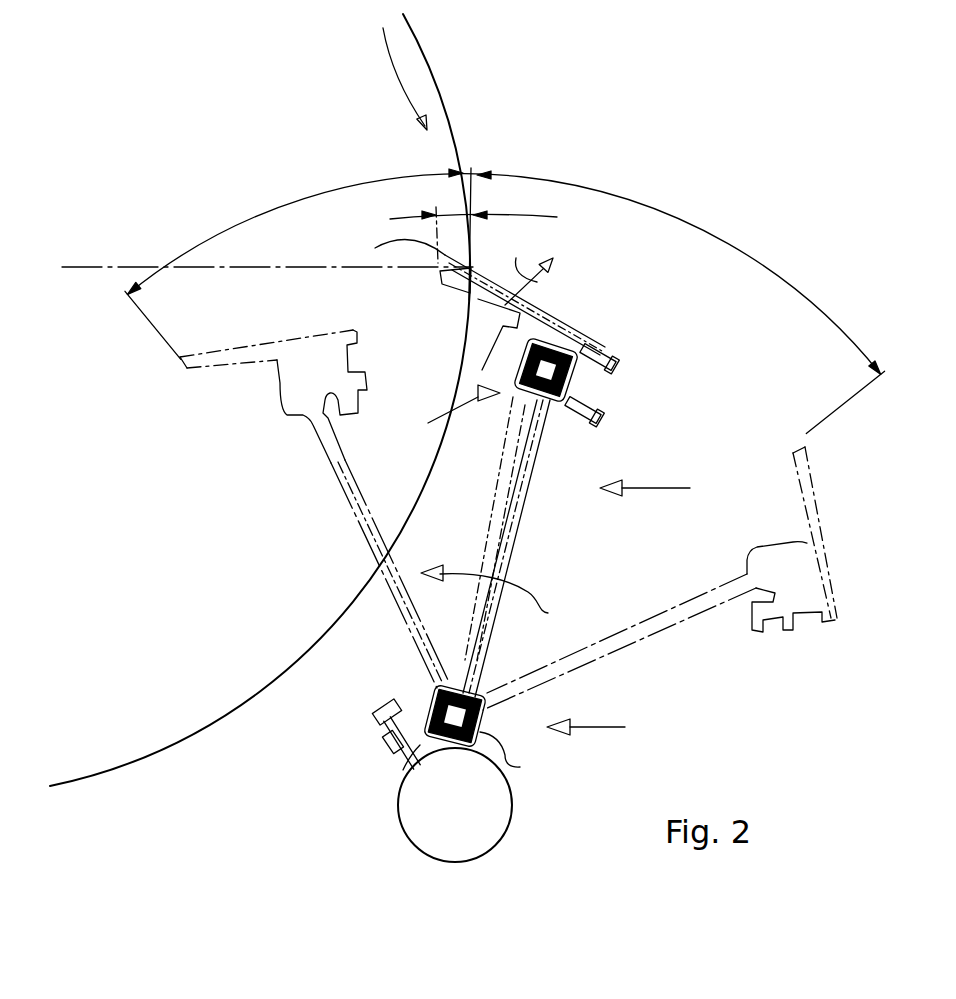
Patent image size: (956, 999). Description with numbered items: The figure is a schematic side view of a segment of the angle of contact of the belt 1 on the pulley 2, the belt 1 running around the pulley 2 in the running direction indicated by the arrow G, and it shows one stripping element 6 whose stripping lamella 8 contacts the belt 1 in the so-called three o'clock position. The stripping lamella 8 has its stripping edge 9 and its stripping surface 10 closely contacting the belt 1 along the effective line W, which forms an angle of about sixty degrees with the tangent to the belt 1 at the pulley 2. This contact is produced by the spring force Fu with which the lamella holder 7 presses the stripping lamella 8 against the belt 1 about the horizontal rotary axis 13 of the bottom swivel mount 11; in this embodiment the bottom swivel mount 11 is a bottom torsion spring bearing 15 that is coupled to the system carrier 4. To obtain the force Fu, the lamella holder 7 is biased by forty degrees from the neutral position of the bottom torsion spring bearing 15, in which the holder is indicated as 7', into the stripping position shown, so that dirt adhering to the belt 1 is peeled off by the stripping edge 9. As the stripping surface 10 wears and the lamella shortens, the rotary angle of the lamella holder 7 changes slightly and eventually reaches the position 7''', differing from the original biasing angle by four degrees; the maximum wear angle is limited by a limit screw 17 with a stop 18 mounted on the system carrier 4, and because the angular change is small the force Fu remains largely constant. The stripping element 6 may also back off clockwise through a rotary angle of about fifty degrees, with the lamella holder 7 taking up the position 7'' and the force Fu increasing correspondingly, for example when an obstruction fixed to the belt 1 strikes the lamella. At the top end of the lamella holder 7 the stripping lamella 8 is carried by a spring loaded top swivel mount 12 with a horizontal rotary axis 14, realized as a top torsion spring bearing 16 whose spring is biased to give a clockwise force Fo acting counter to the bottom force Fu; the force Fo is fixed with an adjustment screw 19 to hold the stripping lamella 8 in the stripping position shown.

The belt 1 is at (440, 92).
The pulley 2 is at (292, 118).
The system carrier 4 is at (398, 815).
The stripping element 6 is at (654, 488).
The lamella holder 7 is at (519, 548).
The lamella holder in neutral position 7' is at (314, 509).
The lamella holder in backed-off position 7'' is at (660, 578).
The lamella holder in worn position 7''' is at (483, 528).
The stripping lamella 8 is at (553, 312).
The stripping edge 9 is at (400, 249).
The stripping surface 10 is at (472, 273).
The bottom swivel mount 11 is at (477, 758).
The spring loaded top swivel mount 12 is at (590, 345).
The horizontal rotary axis of bottom swivel mount 13 is at (430, 700).
The horizontal rotary axis of top swivel mount 14 is at (560, 407).
The bottom torsion spring bearing 15 is at (608, 731).
The top torsion spring bearing 16 is at (448, 412).
The limit screw 17 is at (372, 710).
The stop 18 is at (383, 745).
The adjustment screw 19 is at (597, 380).
The belt running direction G is at (405, 79).
The effective line W is at (443, 267).
The top spring force Fo is at (529, 269).
The bottom spring force Fu is at (501, 595).